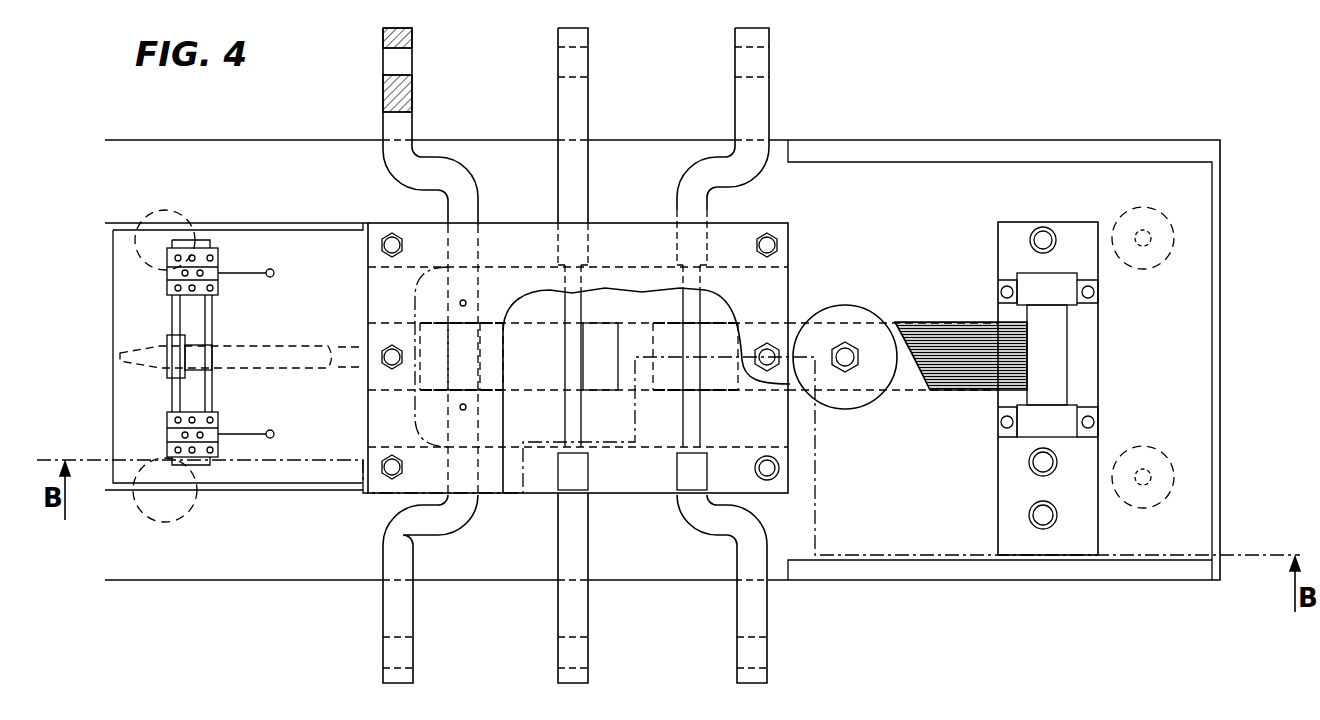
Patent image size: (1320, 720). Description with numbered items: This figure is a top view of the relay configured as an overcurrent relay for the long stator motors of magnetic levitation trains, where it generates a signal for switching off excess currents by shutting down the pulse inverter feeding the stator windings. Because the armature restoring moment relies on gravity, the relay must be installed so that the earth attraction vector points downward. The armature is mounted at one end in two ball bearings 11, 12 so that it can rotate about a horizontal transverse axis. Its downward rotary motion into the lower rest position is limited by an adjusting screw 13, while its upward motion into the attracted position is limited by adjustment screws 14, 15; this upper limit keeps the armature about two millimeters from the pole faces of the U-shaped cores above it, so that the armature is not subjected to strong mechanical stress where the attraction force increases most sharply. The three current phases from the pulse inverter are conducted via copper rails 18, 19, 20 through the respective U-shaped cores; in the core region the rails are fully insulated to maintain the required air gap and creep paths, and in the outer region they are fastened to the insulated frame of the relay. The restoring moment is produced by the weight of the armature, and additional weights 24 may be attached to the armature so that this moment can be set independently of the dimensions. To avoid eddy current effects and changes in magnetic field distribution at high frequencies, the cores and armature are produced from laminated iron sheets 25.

The ball bearing 11 is at (1052, 286).
The ball bearing 12 is at (1100, 437).
The adjusting screw 13 is at (385, 366).
The adjustment screw 14 is at (385, 366).
The adjustment screw 15 is at (766, 371).
The copper rail 18 is at (413, 676).
The copper rail 19 is at (588, 676).
The copper rail 20 is at (768, 676).
The additional weight 24 is at (846, 340).
The laminated iron sheets 25 is at (950, 322).